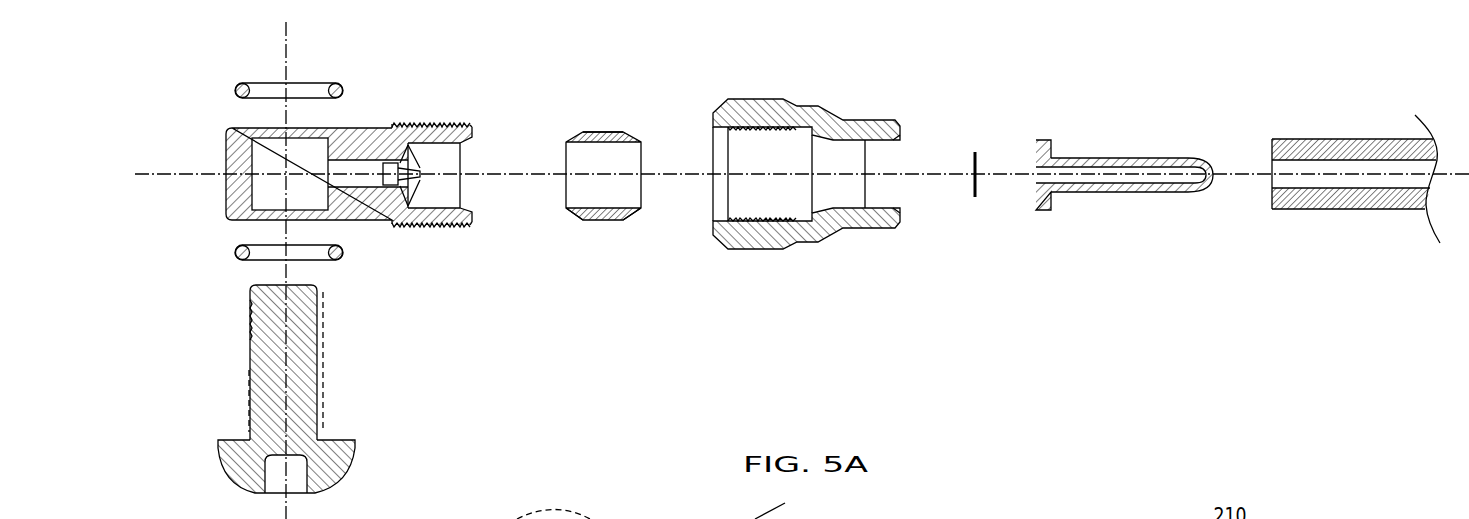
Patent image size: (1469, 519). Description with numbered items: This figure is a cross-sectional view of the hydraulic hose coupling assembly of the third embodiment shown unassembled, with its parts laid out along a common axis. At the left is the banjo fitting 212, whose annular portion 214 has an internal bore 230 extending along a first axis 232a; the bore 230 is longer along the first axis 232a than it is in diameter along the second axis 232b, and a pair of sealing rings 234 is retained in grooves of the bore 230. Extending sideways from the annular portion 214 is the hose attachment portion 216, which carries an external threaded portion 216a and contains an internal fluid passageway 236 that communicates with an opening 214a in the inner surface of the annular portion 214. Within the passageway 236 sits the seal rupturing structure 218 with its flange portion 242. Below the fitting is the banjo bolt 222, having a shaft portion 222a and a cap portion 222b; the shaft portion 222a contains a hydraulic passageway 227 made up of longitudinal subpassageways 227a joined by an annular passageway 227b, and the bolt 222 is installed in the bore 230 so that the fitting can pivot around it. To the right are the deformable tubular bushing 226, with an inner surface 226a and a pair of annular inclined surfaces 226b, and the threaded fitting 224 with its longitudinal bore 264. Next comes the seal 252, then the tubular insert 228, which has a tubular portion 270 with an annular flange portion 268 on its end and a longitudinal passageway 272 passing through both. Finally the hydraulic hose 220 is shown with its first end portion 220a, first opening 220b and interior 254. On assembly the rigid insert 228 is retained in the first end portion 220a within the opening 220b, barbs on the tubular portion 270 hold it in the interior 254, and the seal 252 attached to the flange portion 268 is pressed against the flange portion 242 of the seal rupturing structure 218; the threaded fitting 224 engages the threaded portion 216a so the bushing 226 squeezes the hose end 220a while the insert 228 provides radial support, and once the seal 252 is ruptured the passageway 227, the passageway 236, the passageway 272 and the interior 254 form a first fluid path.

The banjo fitting 212 is at (354, 159).
The annular portion 214 is at (225, 198).
The opening 214a is at (333, 168).
The hose attachment portion 216 is at (375, 219).
The external threaded portion 216a is at (417, 226).
The seal rupturing structure 218 is at (403, 164).
The hydraulic hose 220 is at (1332, 155).
The first end portion 220a is at (1290, 138).
The first opening 220b is at (1272, 182).
The banjo bolt 222 is at (301, 389).
The shaft portion 222a is at (248, 358).
The cap portion 222b is at (228, 466).
The threaded fitting 224 is at (841, 138).
The deformable tubular bushing 226 is at (613, 152).
The inner surface 226a is at (625, 143).
The annular inclined surfaces 226b is at (580, 220).
The hydraulic passageway 227 is at (352, 362).
The longitudinal subpassageways 227a is at (318, 348).
The annular passageway 227b is at (252, 398).
The tubular insert 228 is at (1105, 163).
The internal bore 230 is at (272, 150).
The first axis 232a is at (285, 53).
The second axis 232b is at (177, 174).
The sealing rings 234 is at (235, 90).
The internal fluid passageway 236 is at (448, 185).
The flange portion 242 is at (412, 188).
The seal 252 is at (973, 188).
The interior 254 is at (1392, 182).
The nut bore 264 is at (893, 163).
The annular flange portion 268 is at (1042, 208).
The tubular portion 270 is at (1110, 193).
The longitudinal passageway 272 is at (1035, 180).